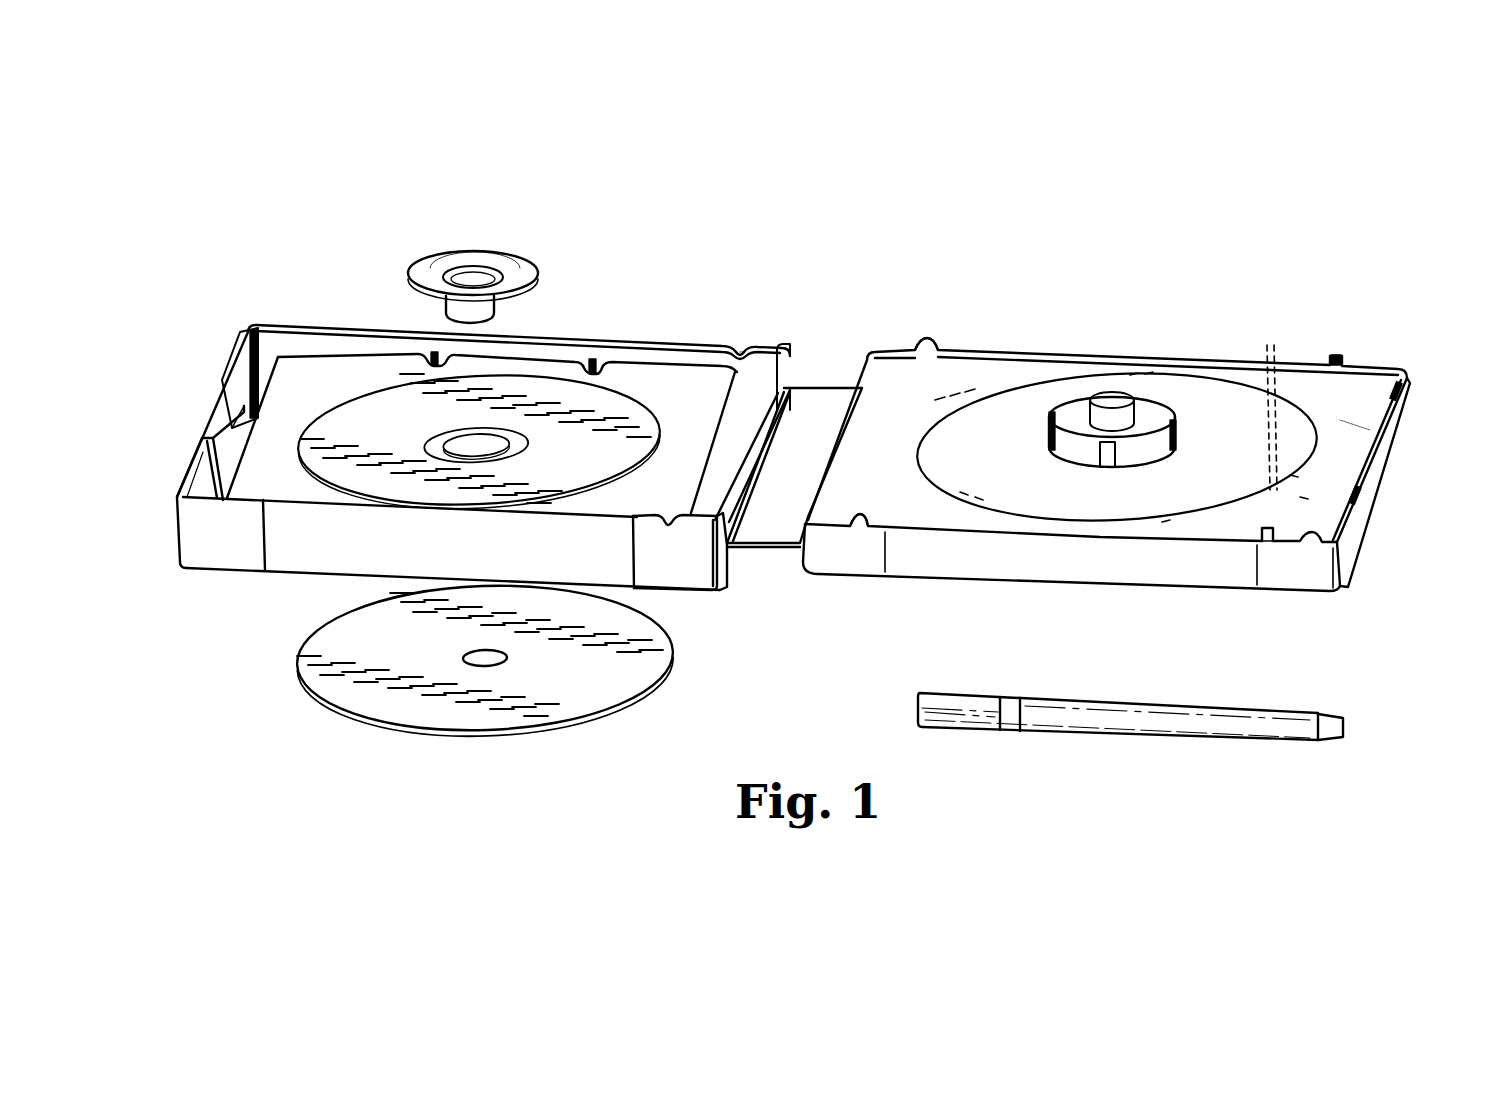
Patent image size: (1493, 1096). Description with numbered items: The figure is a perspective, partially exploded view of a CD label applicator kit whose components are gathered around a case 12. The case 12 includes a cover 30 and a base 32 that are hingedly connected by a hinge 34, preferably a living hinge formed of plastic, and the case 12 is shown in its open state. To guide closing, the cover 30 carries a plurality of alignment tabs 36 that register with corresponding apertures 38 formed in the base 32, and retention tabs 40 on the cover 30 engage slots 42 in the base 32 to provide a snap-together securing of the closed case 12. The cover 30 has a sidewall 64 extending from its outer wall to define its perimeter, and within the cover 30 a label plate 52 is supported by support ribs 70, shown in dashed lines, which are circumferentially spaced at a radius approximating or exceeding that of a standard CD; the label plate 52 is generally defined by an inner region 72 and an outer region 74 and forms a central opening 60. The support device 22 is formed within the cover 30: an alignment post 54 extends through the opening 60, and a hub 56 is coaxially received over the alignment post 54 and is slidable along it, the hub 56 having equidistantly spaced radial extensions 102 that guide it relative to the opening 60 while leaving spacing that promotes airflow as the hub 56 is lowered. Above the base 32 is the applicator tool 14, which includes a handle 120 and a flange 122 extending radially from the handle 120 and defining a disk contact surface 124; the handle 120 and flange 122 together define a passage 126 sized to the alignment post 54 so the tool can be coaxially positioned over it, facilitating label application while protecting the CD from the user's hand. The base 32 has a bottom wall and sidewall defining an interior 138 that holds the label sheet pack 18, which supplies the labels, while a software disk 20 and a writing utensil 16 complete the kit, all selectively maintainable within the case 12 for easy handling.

The case 12 is at (798, 575).
The applicator tool 14 is at (470, 244).
The writing utensil 16 is at (1153, 735).
The label sheet pack 18 is at (641, 370).
The software disk 20 is at (558, 729).
The support device 22 is at (1113, 468).
The cover 30 is at (1390, 477).
The base 32 is at (186, 453).
The hinge 34 is at (828, 378).
The alignment tabs 36 is at (928, 345).
The apertures 38 is at (740, 348).
The retention tabs 40 is at (1400, 393).
The slots 42 is at (232, 356).
The label plate 52 is at (1358, 406).
The alignment post 54 is at (1115, 410).
The hub 56 is at (1148, 460).
The opening 60 is at (1148, 455).
The sidewall 64 is at (1355, 527).
The support ribs 70 is at (1269, 402).
The inner region 72 is at (1018, 405).
The outer region 74 is at (885, 385).
The radial extensions 102 is at (1052, 430).
The handle 120 is at (488, 316).
The flange 122 is at (420, 265).
The disk contact surface 124 is at (525, 262).
The passage 126 is at (472, 278).
The interior 138 is at (268, 350).